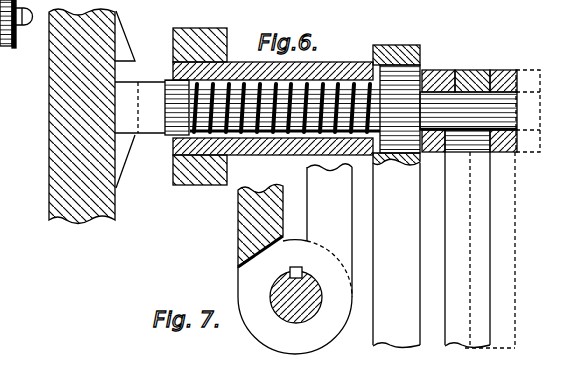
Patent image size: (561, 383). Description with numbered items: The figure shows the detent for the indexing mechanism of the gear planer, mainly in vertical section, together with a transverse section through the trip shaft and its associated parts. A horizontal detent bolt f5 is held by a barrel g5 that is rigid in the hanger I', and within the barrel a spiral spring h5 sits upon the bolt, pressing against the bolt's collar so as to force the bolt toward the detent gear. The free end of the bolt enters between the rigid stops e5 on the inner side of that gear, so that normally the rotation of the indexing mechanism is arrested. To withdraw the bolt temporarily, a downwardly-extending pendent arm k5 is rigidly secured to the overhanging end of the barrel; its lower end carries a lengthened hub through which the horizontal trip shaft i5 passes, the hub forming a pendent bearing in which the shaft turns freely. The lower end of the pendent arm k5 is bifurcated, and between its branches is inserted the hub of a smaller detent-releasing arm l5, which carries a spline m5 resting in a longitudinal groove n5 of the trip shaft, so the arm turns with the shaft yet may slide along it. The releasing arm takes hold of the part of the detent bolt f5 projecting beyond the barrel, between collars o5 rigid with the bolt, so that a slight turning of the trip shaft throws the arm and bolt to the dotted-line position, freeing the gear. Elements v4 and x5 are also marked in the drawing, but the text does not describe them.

In FIG. 6, the hanger I' is at (137, 122).
In FIG. 6, the adjusting screw v4 is at (10, 48).
In FIG. 6, the stops e5 is at (124, 42).
In FIG. 6, the pivot pin x5 is at (140, 107).
In FIG. 6, the barrel g5 is at (348, 68).
In FIG. 6, the spiral spring h5 is at (257, 83).
In FIG. 6, the detent bolt f5 is at (352, 109).
In FIG. 6, the collars o5 is at (438, 72).
In FIG. 7, the pendent arm k5 is at (240, 213).
In FIG. 7, the detent-releasing arm l5 is at (411, 250).
In FIG. 7, the longitudinal groove n5 is at (313, 283).
In FIG. 7, the trip shaft i5 is at (312, 307).
In FIG. 7, the spline m5 is at (296, 267).